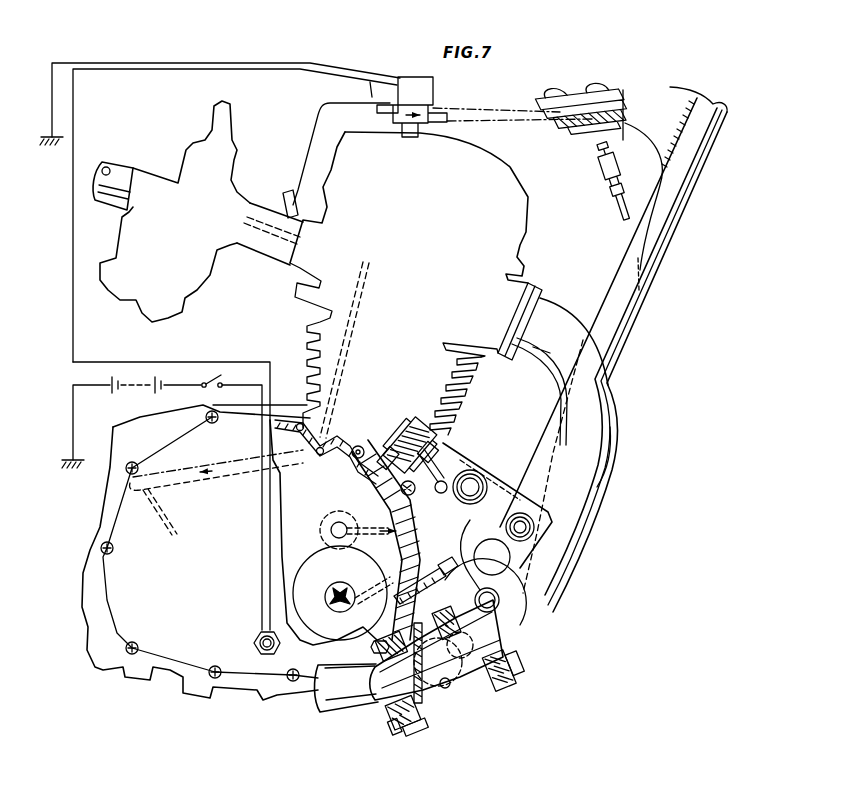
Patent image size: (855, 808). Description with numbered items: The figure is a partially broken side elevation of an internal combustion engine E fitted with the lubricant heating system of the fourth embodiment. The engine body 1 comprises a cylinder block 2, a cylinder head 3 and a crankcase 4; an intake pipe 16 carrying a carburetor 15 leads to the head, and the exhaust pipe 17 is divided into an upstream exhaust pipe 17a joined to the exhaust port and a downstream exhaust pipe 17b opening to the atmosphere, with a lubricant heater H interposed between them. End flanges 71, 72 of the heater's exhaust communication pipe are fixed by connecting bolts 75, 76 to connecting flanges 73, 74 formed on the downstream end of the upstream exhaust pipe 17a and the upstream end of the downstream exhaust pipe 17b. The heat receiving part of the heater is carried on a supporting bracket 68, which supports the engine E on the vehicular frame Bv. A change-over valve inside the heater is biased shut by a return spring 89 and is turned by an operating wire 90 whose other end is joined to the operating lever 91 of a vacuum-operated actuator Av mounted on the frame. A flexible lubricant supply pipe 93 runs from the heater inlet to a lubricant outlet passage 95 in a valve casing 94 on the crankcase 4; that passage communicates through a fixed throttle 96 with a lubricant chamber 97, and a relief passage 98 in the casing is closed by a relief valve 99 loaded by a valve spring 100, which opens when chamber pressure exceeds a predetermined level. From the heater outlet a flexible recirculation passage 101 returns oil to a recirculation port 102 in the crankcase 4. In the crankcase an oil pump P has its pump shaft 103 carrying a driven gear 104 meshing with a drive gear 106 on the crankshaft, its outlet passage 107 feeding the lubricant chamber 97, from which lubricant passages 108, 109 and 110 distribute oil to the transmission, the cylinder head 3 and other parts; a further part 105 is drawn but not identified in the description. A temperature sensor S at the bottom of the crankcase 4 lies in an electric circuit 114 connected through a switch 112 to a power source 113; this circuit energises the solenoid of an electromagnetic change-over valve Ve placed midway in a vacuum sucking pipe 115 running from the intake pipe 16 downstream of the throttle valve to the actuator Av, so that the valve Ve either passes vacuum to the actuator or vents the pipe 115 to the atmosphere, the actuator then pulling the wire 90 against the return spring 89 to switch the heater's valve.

The engine body 1 is at (474, 378).
The cylinder block 2 is at (385, 349).
The cylinder head 3 is at (409, 207).
The crankcase 4 is at (200, 552).
The carburetor 15 is at (171, 211).
The intake pipe 16 is at (265, 210).
The exhaust pipe 17 is at (590, 540).
The upstream exhaust pipe 17a is at (615, 422).
The downstream exhaust pipe 17b is at (330, 713).
The supporting bracket 68 is at (547, 520).
The end flange 71 is at (493, 690).
The end flange 72 is at (415, 731).
The connecting flange 73 is at (503, 662).
The connecting flange 74 is at (388, 714).
The connecting bolt 75 is at (510, 679).
The connecting bolt 76 is at (395, 731).
The return spring 89 is at (398, 630).
The operating wire 90 is at (640, 287).
The operating lever 91 is at (604, 149).
The flexible lubricant supply pipe 93 is at (463, 556).
The valve casing 94 is at (405, 430).
The lubricant outlet passage 95 is at (423, 462).
The fixed throttle 96 is at (424, 480).
The lubricant chamber 97 is at (392, 497).
The relief passage 98 is at (380, 453).
The relief valve 99 is at (388, 450).
The valve spring 100 is at (422, 450).
The flexible recirculation passage 101 is at (500, 612).
The recirculation port 102 is at (395, 598).
The pump shaft 103 is at (330, 590).
The driven gear 104 is at (312, 562).
The shaft 105 is at (331, 530).
The drive gear 106 is at (338, 511).
The outlet passage 107 is at (362, 590).
The lubricant passage 108 is at (371, 521).
The lubricant passage 109 is at (178, 472).
The lubricant passage 110 is at (334, 393).
The switch 112 is at (216, 391).
The power source 113 is at (141, 397).
The electric circuit 114 is at (73, 326).
The vacuum sucking pipe 115 is at (316, 131).
The electromagnetic change-over valve Ve is at (433, 99).
The vacuum-operated actuator Av is at (618, 113).
The internal combustion engine E is at (537, 190).
The vehicular frame Bv is at (680, 229).
The oil pump P is at (326, 603).
The temperature sensor S is at (254, 643).
The lubricant heater H is at (452, 700).